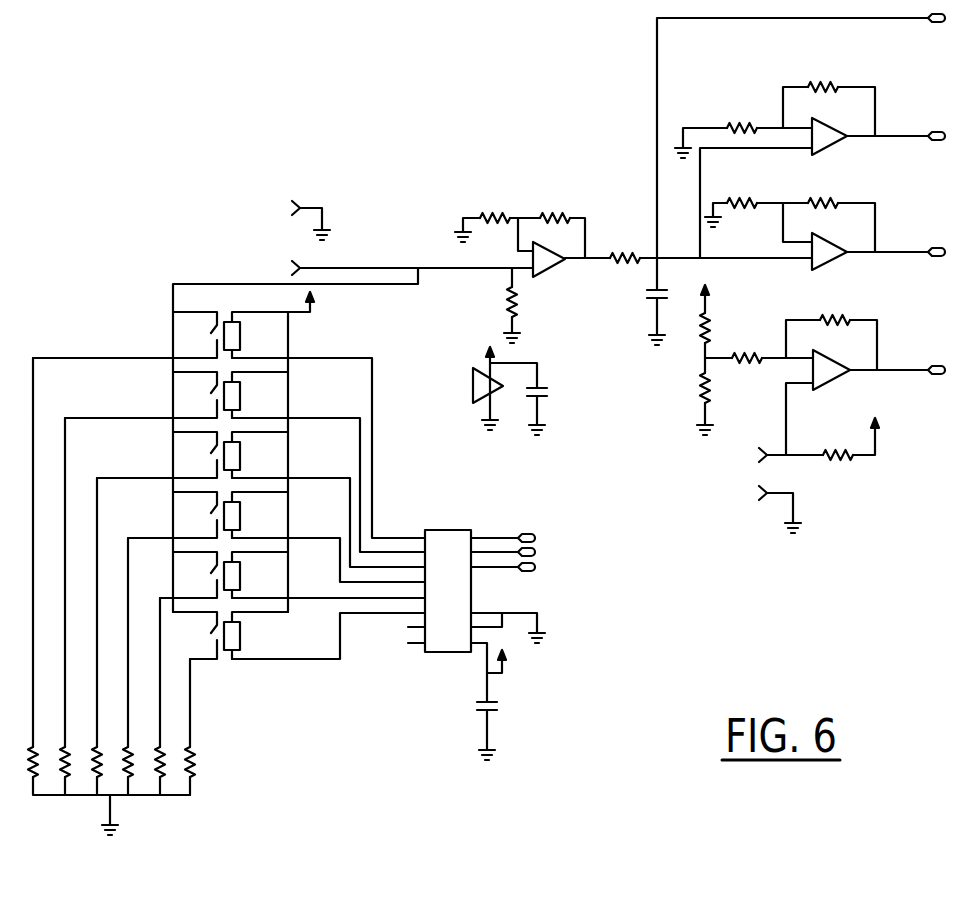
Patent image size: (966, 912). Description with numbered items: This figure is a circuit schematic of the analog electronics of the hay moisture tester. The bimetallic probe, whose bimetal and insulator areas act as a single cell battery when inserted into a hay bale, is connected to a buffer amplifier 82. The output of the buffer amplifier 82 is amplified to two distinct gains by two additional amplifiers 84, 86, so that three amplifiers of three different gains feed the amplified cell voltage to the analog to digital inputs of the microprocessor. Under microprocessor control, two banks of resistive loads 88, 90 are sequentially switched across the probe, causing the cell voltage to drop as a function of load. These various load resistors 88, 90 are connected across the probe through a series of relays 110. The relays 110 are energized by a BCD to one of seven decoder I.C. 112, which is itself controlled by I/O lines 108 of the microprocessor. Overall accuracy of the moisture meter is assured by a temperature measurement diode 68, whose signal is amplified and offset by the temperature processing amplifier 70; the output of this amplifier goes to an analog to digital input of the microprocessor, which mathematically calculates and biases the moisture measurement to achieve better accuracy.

The I/O lines 108 is at (142, 357).
The relays 110 is at (404, 368).
The BCD to 1 of 7 decoder I.C. 112 is at (458, 529).
The buffer amplifier 82 is at (555, 189).
The amplifier 84 is at (894, 78).
The amplifier 86 is at (895, 199).
The temperature processing amplifier 70 is at (899, 323).
The temperature measurement diode 68 is at (742, 483).
The resistive loads 88 is at (63, 812).
The resistive loads 90 is at (157, 812).